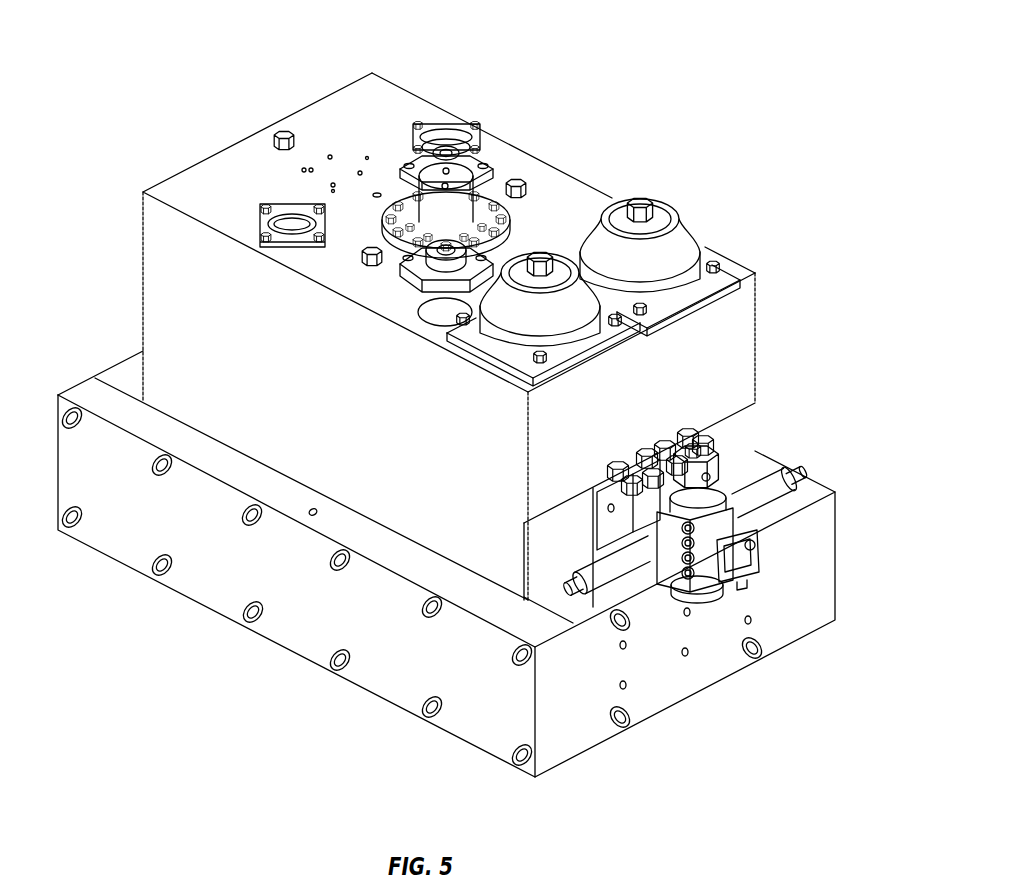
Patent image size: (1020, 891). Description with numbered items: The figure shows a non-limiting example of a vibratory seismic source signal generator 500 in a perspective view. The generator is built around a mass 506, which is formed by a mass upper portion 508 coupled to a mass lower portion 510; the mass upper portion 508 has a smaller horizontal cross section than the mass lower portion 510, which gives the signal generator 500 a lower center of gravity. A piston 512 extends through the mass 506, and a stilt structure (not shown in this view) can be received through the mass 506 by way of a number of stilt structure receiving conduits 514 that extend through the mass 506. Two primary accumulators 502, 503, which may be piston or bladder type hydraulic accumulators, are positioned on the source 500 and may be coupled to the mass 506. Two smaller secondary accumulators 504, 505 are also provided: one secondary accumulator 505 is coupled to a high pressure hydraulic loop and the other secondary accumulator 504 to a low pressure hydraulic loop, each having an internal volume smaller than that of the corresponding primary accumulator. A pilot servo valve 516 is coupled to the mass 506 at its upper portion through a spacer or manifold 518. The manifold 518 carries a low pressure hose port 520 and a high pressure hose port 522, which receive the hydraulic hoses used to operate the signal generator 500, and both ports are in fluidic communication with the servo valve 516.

The vibratory seismic source signal generator 500 is at (194, 80).
The primary accumulator 502 is at (503, 316).
The primary accumulator 503 is at (669, 202).
The secondary accumulator 504 is at (645, 547).
The secondary accumulator 505 is at (783, 465).
The mass 506 is at (148, 270).
The mass upper portion 508 is at (393, 85).
The mass lower portion 510 is at (64, 416).
The piston 512 is at (465, 178).
The stilt structure receiving conduits 514 is at (258, 215).
The pilot servo valve 516 is at (752, 553).
The manifold 518 is at (604, 533).
The low pressure hose port 520 is at (615, 473).
The high pressure hose port 522 is at (705, 437).